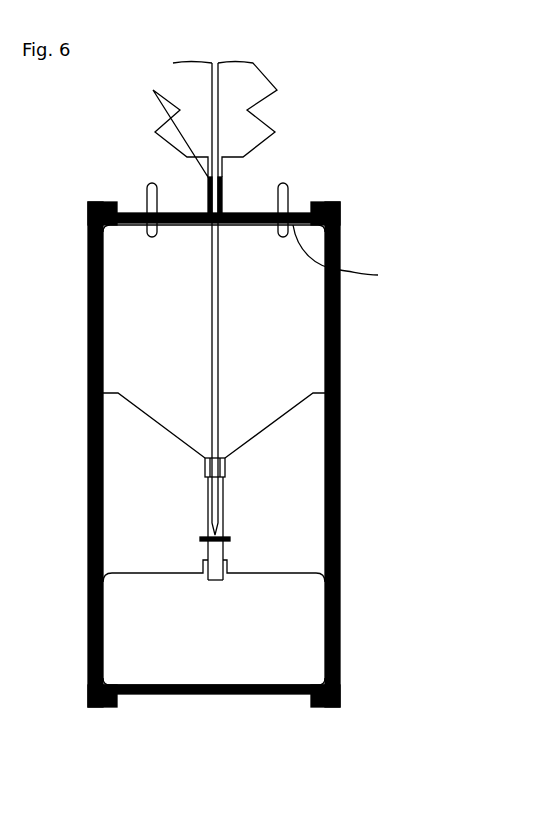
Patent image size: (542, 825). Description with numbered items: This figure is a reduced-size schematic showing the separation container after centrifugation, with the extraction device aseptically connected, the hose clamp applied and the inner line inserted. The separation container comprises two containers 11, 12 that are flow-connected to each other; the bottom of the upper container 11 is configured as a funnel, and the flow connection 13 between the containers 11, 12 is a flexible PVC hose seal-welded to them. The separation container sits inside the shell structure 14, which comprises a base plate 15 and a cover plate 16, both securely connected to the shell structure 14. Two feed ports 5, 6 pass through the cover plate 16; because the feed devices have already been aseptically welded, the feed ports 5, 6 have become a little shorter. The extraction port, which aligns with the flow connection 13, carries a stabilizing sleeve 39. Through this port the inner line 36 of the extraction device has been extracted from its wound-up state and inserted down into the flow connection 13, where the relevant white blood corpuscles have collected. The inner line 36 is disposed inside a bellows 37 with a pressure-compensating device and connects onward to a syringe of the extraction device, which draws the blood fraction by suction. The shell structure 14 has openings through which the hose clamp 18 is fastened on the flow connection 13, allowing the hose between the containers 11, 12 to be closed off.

The feed port 5 is at (145, 190).
The feed port 6 is at (290, 190).
The container 11 is at (273, 372).
The container 12 is at (285, 627).
The flow connection 13 is at (208, 498).
The shell structure 14 is at (340, 333).
The base plate 15 is at (217, 693).
The cover plate 16 is at (351, 255).
The hose clamp 18 is at (200, 545).
The inner line 36 is at (212, 320).
The bellows 37 is at (247, 85).
The stabilizing sleeve 39 is at (220, 203).